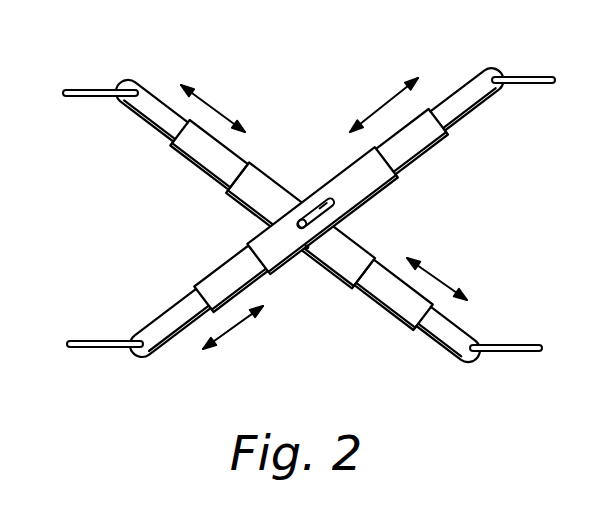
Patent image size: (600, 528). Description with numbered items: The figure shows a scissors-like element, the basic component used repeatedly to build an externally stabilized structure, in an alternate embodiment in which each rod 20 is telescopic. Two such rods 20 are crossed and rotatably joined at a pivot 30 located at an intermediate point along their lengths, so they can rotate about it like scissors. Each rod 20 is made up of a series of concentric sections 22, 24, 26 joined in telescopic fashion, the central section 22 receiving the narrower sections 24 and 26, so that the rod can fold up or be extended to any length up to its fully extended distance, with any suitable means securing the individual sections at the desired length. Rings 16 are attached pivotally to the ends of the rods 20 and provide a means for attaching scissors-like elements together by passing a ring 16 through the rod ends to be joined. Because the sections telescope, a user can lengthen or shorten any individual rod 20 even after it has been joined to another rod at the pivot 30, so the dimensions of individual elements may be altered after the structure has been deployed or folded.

The ring 16 is at (89, 88).
The rod 20 is at (287, 272).
The concentric rod section 22 is at (323, 188).
The concentric rod section 24 is at (195, 166).
The concentric rod section 26 is at (157, 80).
The pivot 30 is at (298, 225).